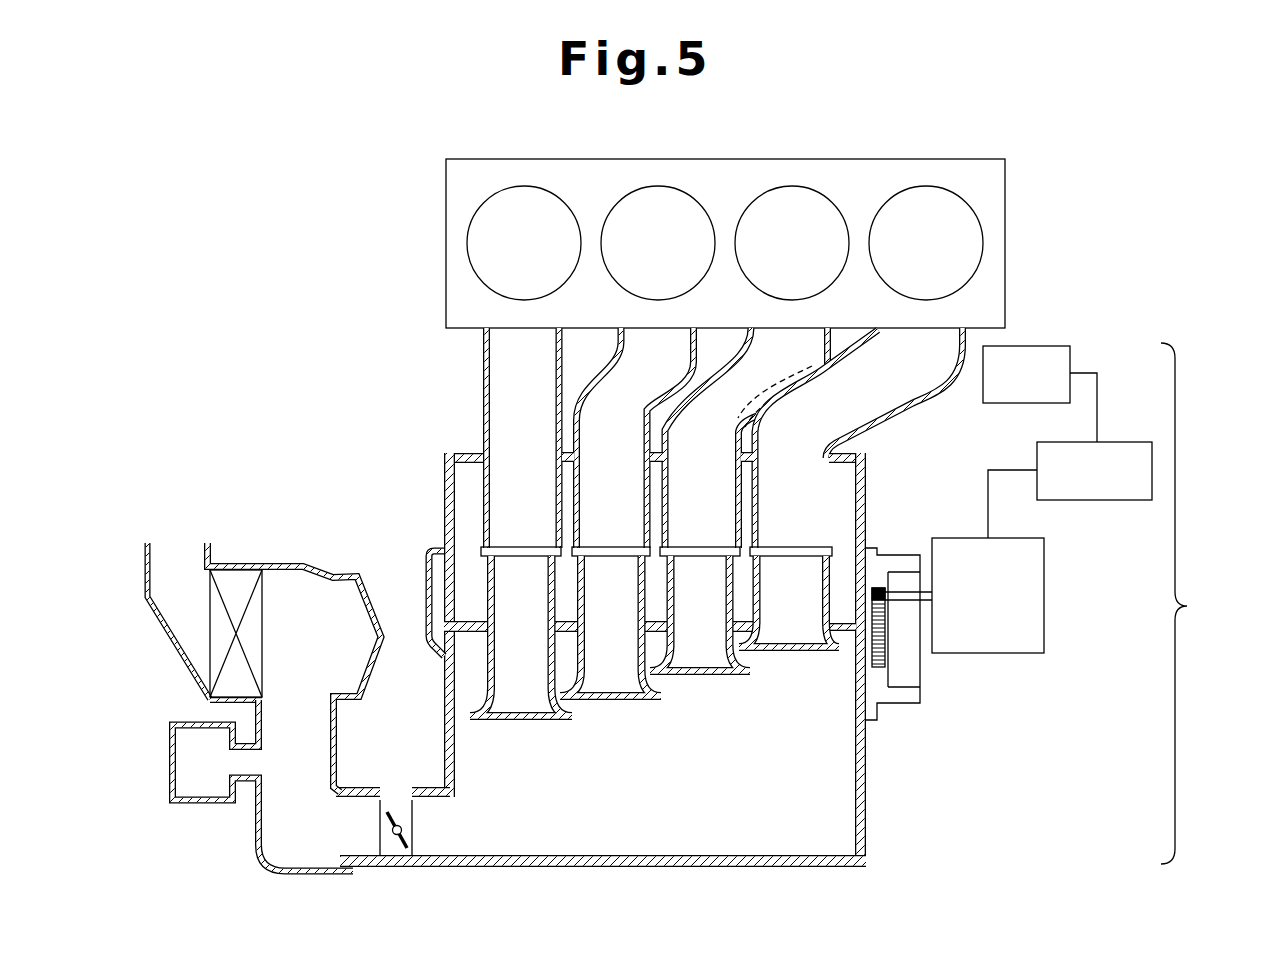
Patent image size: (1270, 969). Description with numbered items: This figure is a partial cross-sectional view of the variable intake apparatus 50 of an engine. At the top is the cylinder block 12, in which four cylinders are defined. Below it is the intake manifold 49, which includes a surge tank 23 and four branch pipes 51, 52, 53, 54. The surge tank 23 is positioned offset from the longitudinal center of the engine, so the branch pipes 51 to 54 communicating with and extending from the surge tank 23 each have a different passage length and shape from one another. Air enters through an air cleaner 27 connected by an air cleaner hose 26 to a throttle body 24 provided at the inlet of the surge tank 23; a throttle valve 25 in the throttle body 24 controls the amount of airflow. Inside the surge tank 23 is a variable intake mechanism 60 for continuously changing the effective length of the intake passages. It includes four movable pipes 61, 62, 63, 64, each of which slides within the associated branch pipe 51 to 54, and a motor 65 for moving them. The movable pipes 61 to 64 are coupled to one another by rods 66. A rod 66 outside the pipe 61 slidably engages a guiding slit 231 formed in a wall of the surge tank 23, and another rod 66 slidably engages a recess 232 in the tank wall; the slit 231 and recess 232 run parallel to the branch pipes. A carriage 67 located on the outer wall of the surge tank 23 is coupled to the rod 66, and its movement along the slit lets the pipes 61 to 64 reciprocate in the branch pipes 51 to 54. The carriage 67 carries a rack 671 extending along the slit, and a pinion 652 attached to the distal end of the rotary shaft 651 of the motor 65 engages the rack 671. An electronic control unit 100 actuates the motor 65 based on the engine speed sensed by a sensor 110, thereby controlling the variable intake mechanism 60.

The cylinder block 12 is at (948, 158).
The surge tank 23 is at (718, 868).
The guiding slit 231 is at (455, 570).
The recess 232 is at (855, 634).
The throttle body 24 is at (392, 871).
The throttle valve 25 is at (409, 837).
The air cleaner hose 26 is at (263, 815).
The air cleaner 27 is at (263, 628).
The intake manifold 49 is at (870, 465).
The variable intake apparatus 50 is at (1246, 625).
The branch pipe 51 is at (490, 370).
The branch pipe 52 is at (593, 370).
The branch pipe 53 is at (700, 382).
The branch pipe 54 is at (848, 357).
The variable intake mechanism 60 is at (694, 726).
The movable pipe 61 is at (497, 590).
The movable pipe 62 is at (585, 590).
The movable pipe 63 is at (673, 590).
The movable pipe 64 is at (764, 590).
The motor 65 is at (1032, 573).
The rotary shaft 651 is at (910, 598).
The pinion 652 is at (876, 577).
The rod 66 is at (468, 633).
The carriage 67 is at (905, 698).
The rack 671 is at (883, 658).
The electronic control unit 100 is at (1150, 418).
The sensor 110 is at (1050, 342).